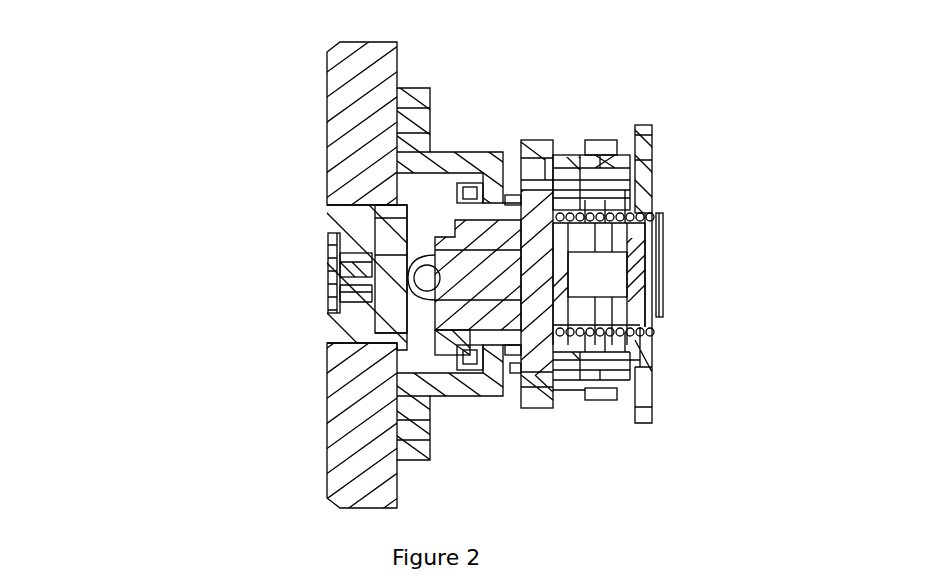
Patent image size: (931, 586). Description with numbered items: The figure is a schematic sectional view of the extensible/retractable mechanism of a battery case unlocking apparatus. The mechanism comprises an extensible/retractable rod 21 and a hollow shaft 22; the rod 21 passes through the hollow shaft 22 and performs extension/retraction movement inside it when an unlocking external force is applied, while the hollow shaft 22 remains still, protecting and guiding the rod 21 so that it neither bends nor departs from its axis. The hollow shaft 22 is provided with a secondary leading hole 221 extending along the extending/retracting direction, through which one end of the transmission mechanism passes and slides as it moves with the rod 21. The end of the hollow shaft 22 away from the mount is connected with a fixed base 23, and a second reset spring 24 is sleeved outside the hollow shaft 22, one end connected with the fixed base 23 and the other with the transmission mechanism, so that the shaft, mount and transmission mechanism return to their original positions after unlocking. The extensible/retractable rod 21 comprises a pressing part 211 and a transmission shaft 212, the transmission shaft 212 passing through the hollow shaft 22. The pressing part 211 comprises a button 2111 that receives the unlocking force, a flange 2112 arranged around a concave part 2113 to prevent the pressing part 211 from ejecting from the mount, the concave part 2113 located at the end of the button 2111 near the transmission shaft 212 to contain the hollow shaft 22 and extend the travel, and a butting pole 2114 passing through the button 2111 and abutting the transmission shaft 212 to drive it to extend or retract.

The extensible/retractable rod 21 is at (98, 246).
The pressing part 211 is at (178, 176).
The button 2111 is at (385, 228).
The flange 2112 is at (405, 205).
The concave part 2113 is at (392, 238).
The butting pole 2114 is at (405, 270).
The transmission shaft 212 is at (408, 289).
The hollow shaft 22 is at (660, 308).
The secondary leading hole 221 is at (577, 237).
The fixed base 23 is at (640, 360).
The second reset spring 24 is at (662, 267).